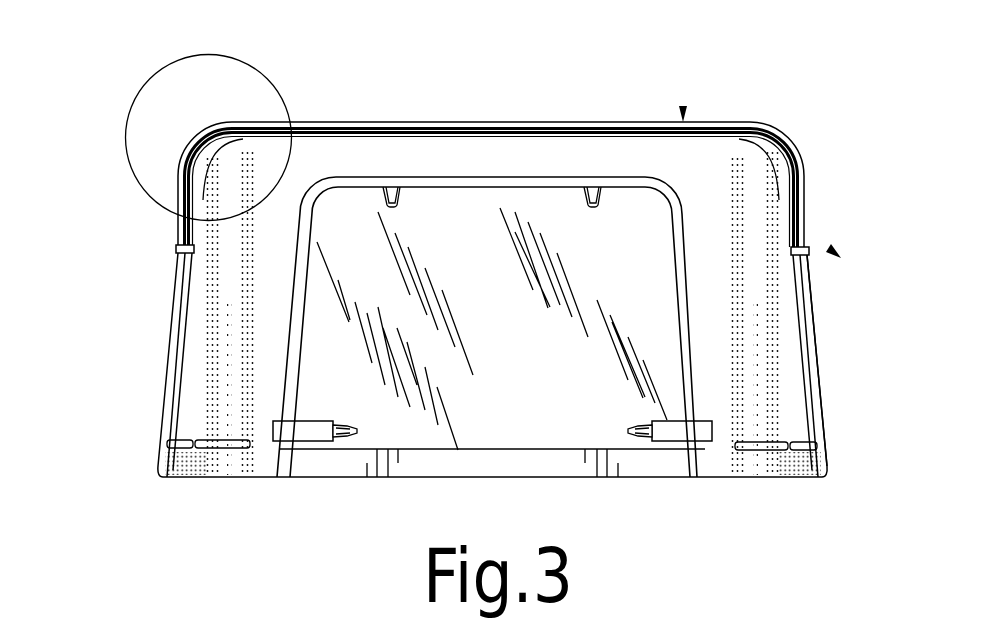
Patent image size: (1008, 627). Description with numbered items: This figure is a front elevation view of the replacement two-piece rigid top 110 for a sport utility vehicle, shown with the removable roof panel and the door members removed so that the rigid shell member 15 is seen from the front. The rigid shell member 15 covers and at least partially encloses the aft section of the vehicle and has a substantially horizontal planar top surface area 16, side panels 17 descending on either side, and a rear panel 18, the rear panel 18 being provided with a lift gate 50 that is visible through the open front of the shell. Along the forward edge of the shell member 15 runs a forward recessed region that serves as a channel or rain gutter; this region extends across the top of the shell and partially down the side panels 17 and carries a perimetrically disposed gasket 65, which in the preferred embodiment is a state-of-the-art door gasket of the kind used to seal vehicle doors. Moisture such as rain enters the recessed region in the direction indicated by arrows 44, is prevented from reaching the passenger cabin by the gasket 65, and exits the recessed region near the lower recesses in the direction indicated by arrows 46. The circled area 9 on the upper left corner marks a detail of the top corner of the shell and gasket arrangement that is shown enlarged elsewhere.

The detail circle (area shown enlarged in FIG. 9) 9 is at (135, 105).
The gasket 65 is at (320, 121).
The two-piece rigid top 110 is at (436, 85).
The top surface area 16 is at (528, 122).
The lift gate 50 is at (513, 200).
The arrows 44 is at (683, 108).
The arrows 46 is at (830, 252).
The rigid shell member 15 is at (832, 301).
The side panels 17 is at (817, 348).
The rear panel 18 is at (790, 395).